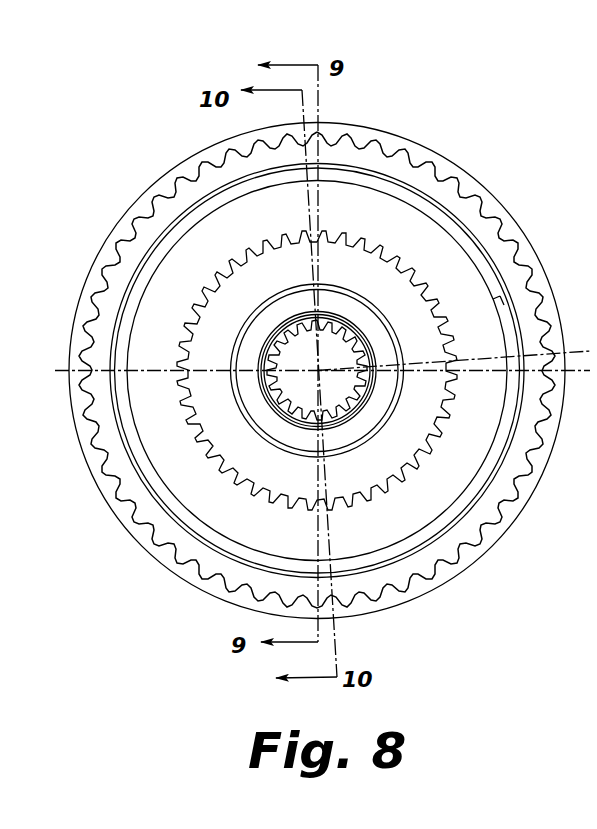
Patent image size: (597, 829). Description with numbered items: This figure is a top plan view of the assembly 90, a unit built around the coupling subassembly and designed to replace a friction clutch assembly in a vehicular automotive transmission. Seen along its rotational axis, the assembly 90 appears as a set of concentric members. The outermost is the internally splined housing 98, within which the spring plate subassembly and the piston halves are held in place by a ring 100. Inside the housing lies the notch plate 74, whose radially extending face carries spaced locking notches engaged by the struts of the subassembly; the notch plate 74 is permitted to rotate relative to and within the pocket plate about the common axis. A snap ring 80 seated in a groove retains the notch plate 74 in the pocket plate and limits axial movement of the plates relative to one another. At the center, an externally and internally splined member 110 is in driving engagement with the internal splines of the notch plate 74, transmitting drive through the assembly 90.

The assembly 90 is at (372, 95).
The ring 100 is at (393, 165).
The housing 98 is at (447, 171).
The snap ring 80 is at (470, 240).
The notch plate 74 is at (504, 329).
The externally and internally splined member 110 is at (400, 443).